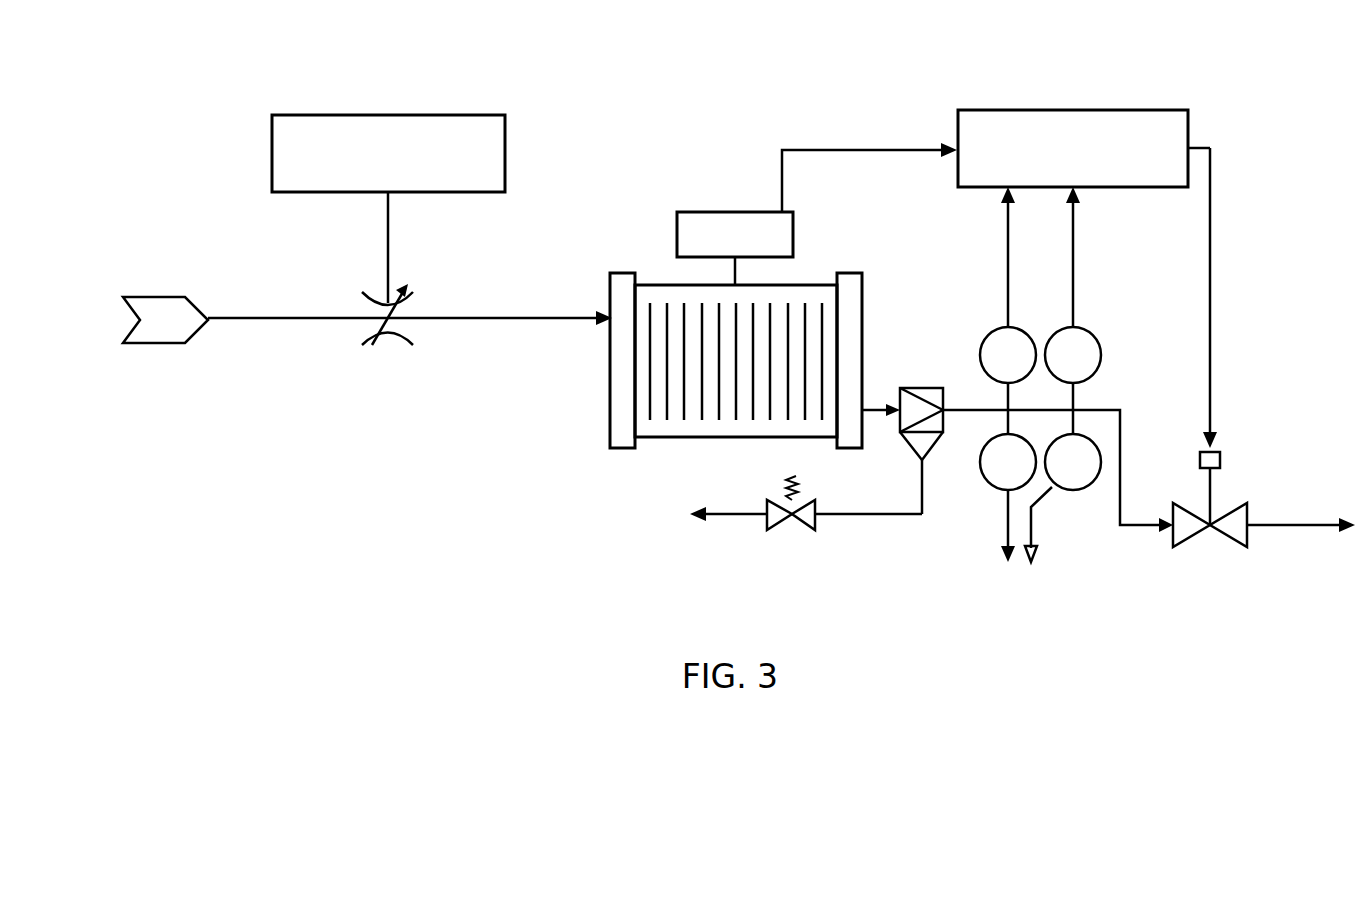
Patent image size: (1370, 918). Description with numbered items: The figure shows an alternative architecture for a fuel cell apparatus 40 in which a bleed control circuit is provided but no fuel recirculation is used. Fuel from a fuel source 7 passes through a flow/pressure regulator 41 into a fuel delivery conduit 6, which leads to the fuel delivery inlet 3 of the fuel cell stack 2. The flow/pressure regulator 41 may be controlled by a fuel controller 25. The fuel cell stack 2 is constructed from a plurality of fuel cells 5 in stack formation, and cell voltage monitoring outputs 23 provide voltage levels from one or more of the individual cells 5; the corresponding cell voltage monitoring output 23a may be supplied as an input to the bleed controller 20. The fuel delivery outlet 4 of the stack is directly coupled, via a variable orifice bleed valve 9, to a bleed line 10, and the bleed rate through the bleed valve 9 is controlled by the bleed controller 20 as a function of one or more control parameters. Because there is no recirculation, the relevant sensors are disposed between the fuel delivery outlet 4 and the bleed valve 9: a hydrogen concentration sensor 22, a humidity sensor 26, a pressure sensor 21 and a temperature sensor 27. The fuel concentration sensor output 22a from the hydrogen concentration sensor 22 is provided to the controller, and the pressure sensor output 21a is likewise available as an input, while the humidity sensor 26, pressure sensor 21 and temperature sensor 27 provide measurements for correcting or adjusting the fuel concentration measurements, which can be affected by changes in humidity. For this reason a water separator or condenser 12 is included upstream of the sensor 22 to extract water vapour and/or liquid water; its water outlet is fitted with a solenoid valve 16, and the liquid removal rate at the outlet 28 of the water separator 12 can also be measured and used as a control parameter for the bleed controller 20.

The fuel cell apparatus 40 is at (168, 132).
The fuel controller 25 is at (388, 115).
The fuel source 7 is at (163, 343).
The fuel delivery conduit 6 is at (497, 318).
The flow/pressure regulator 41 is at (402, 337).
The fuel cell stack 2 is at (848, 297).
The fuel delivery inlet 3 is at (610, 312).
The fuel cells 5 is at (698, 412).
The cell voltage monitoring outputs 23 is at (720, 212).
The cell voltage monitoring output 23a is at (850, 150).
The fuel delivery outlet 4 is at (872, 408).
The water separator or condenser 12 is at (925, 388).
The bleed controller 20 is at (1135, 110).
The temperature sensor 27 is at (996, 335).
The pressure sensor 21 is at (1090, 335).
The pressure sensor output 21a is at (1075, 258).
The hydrogen concentration sensor 22 is at (990, 483).
The humidity sensor 26 is at (1078, 485).
The fuel concentration sensor output 22a is at (1003, 540).
The variable orifice bleed valve 9 is at (1233, 545).
The bleed line 10 is at (1290, 525).
The solenoid valve 16 is at (799, 530).
The outlet 28 is at (712, 517).